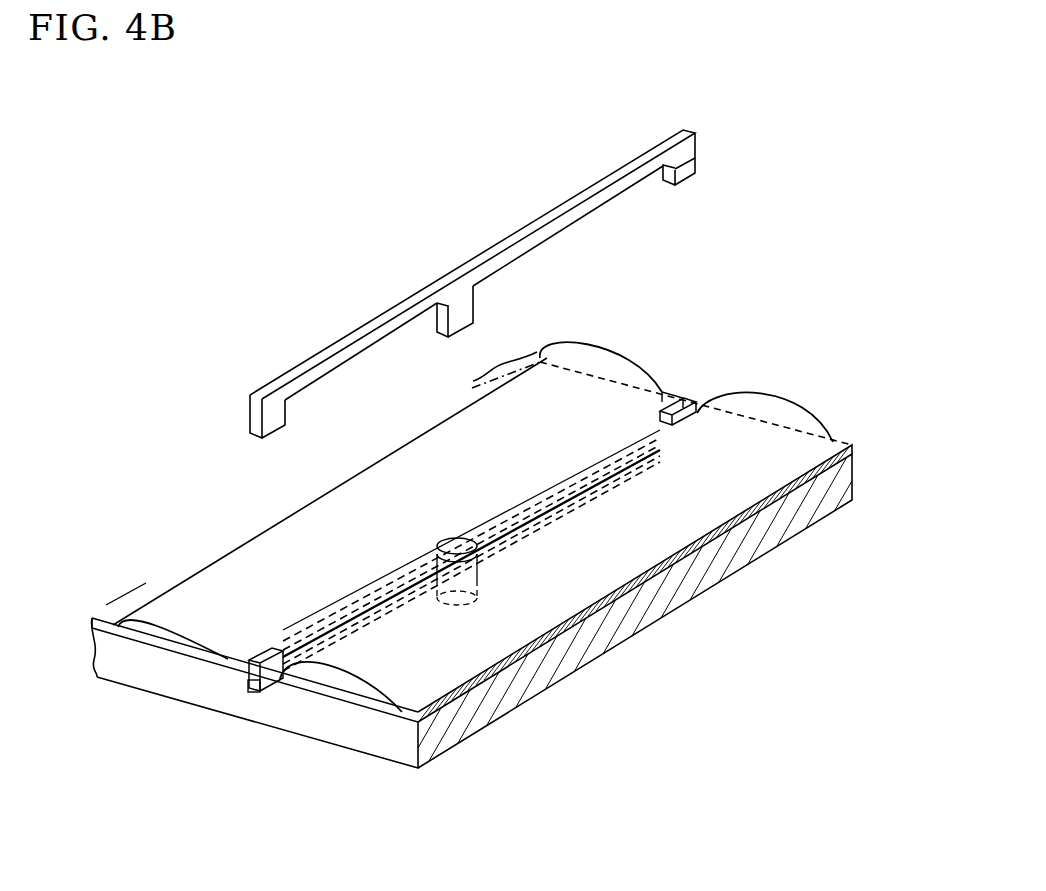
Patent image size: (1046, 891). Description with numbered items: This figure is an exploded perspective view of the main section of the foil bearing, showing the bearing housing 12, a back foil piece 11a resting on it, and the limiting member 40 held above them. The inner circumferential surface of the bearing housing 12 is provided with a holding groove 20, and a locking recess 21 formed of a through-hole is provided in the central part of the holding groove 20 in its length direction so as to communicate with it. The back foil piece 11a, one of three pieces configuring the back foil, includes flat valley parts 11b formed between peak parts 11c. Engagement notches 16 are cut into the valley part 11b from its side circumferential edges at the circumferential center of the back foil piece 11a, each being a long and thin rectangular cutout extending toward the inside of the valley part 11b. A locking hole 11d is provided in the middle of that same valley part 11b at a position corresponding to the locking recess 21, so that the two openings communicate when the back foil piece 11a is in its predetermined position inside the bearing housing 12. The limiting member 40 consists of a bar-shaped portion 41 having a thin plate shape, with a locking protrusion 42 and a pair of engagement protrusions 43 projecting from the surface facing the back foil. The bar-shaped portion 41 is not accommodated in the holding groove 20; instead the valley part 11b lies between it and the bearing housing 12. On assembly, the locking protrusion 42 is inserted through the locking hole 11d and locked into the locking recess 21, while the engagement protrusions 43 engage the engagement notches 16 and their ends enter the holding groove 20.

The back foil piece 11a is at (628, 342).
The valley part 11b is at (532, 357).
The peak part 11c is at (178, 613).
The locking hole 11d is at (452, 538).
The bearing housing 12 is at (358, 737).
The engagement notch 16 is at (248, 656).
The holding groove 20 is at (255, 693).
The locking recess 21 is at (460, 605).
The limiting member 40 is at (473, 287).
The bar-shaped portion 41 is at (400, 318).
The locking protrusion 42 is at (447, 325).
The engagement protrusion 43 is at (258, 418).